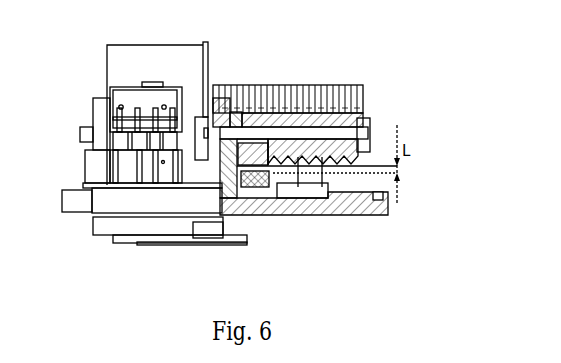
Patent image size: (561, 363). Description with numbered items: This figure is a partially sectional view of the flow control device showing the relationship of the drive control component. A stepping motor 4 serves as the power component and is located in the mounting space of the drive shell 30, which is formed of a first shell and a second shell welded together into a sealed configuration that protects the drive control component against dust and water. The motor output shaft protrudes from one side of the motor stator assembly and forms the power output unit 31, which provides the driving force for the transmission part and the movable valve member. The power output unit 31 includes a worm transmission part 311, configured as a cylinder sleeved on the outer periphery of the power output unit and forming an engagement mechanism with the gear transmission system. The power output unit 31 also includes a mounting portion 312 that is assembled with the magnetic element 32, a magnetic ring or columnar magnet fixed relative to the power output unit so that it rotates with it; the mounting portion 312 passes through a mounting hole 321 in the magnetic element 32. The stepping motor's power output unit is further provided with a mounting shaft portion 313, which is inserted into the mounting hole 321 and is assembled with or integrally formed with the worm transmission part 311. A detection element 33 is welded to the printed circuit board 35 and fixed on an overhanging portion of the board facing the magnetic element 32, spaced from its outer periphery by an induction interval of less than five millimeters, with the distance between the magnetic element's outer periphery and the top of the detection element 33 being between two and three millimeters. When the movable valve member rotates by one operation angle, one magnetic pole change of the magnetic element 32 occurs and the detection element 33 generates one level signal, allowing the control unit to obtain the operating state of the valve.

The stepping motor 4 is at (103, 68).
The drive shell 30 is at (375, 214).
The power output unit 31 is at (347, 90).
The worm transmission part 311 is at (363, 107).
The mounting portion 312 is at (285, 90).
The mounting shaft portion 313 is at (357, 135).
The magnetic element 32 is at (247, 110).
The mounting hole 321 is at (242, 112).
The detection element 33 is at (282, 190).
The printed circuit board 35 is at (248, 190).